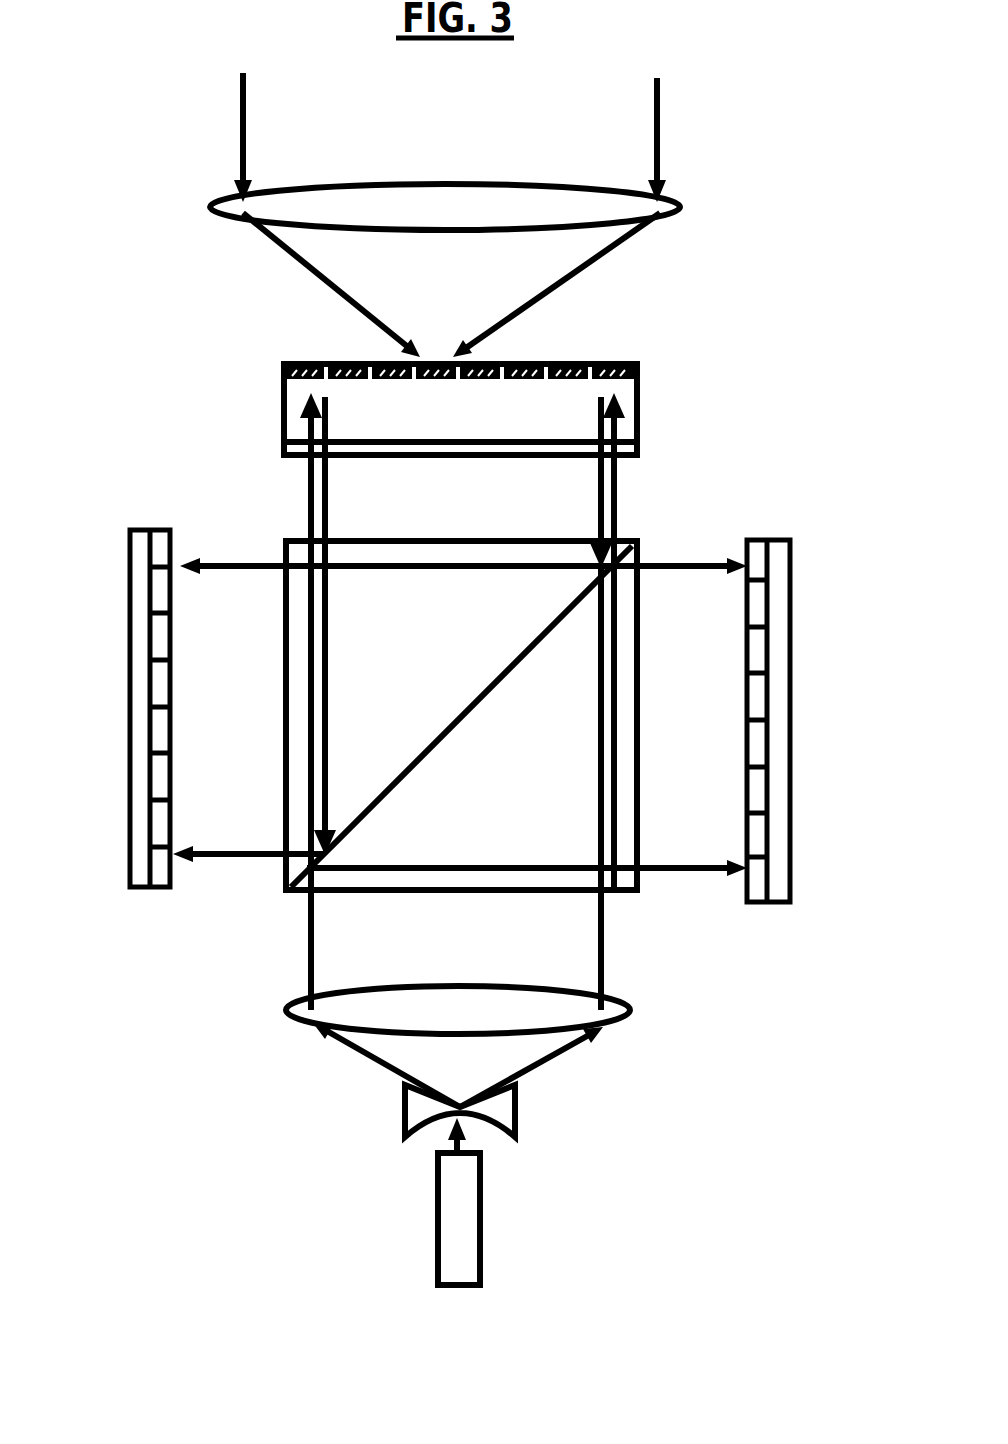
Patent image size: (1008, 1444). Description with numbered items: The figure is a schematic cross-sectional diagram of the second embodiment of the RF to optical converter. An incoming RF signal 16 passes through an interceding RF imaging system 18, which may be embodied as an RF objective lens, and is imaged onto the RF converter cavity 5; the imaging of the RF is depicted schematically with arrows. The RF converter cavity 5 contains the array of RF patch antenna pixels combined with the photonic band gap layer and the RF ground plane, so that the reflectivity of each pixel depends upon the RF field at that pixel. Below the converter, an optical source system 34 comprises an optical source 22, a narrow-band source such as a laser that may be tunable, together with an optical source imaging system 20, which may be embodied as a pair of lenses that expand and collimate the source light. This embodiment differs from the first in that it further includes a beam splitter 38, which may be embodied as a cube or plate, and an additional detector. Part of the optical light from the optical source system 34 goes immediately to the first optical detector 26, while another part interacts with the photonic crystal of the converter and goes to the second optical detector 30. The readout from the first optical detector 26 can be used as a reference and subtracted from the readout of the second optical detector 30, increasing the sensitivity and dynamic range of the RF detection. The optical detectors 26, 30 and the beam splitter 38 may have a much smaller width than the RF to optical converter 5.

The incoming RF signal 16 is at (472, 151).
The RF imaging system 18 is at (648, 217).
The RF converter cavity 5 is at (272, 362).
The beam splitter 38 is at (447, 723).
The second optical detector 30 is at (104, 700).
The first optical detector 26 is at (807, 723).
The optical source system 34 is at (283, 987).
The optical source imaging system 20 is at (625, 1012).
The optical source 22 is at (480, 1253).